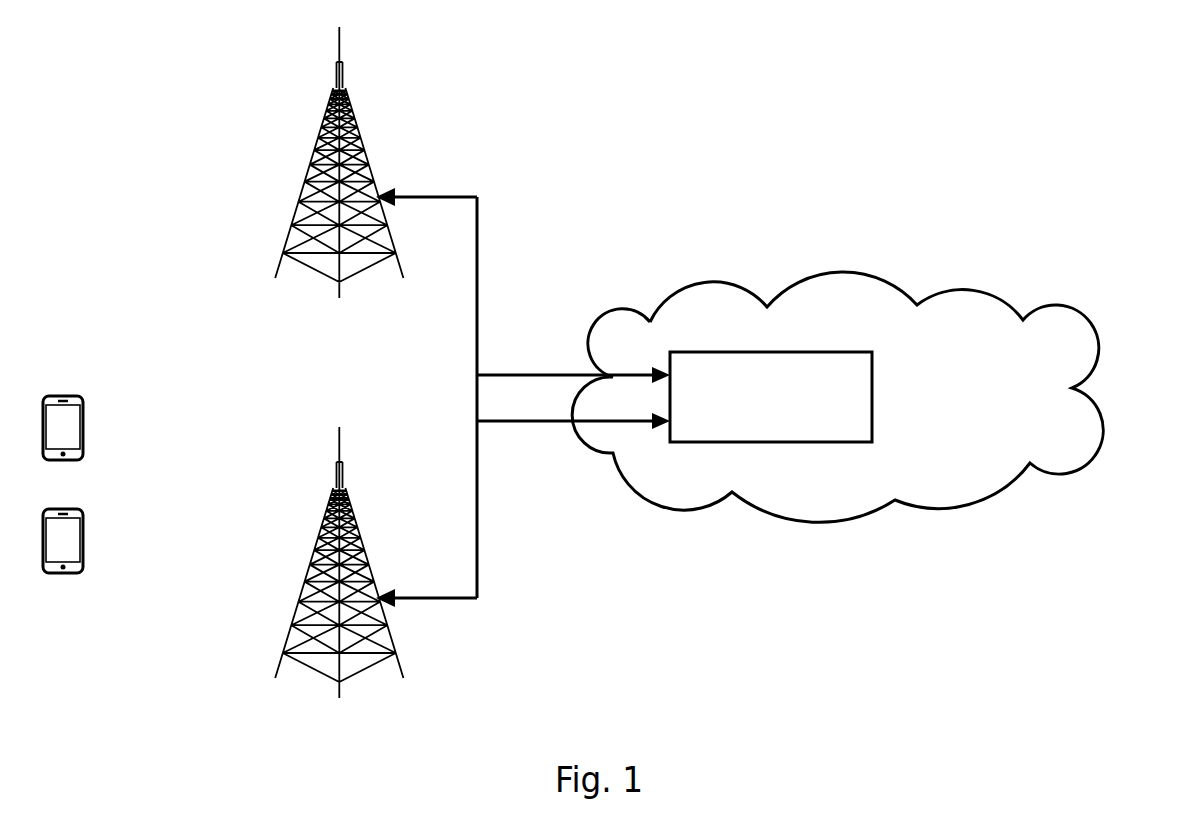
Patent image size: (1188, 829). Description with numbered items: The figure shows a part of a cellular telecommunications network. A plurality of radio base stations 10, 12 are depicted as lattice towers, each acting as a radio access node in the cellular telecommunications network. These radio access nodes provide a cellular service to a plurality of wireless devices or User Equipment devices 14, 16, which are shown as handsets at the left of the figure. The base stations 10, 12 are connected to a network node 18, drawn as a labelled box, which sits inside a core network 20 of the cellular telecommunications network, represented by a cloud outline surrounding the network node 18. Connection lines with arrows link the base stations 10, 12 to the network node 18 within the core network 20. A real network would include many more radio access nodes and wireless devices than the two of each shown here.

The radio base station 10 is at (363, 147).
The radio base station 12 is at (360, 530).
The User Equipment device 14 is at (84, 413).
The User Equipment device 16 is at (84, 527).
The network node 18 is at (873, 381).
The core network 20 is at (1092, 333).